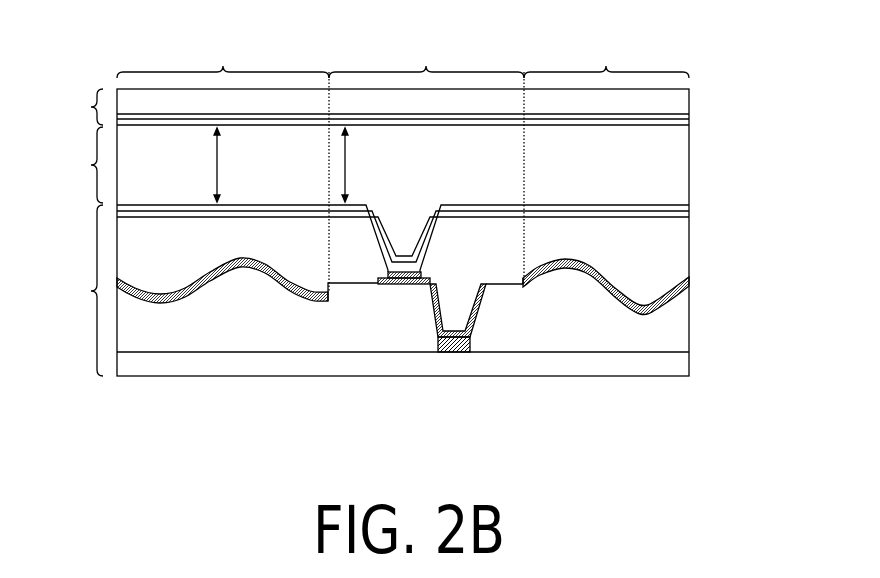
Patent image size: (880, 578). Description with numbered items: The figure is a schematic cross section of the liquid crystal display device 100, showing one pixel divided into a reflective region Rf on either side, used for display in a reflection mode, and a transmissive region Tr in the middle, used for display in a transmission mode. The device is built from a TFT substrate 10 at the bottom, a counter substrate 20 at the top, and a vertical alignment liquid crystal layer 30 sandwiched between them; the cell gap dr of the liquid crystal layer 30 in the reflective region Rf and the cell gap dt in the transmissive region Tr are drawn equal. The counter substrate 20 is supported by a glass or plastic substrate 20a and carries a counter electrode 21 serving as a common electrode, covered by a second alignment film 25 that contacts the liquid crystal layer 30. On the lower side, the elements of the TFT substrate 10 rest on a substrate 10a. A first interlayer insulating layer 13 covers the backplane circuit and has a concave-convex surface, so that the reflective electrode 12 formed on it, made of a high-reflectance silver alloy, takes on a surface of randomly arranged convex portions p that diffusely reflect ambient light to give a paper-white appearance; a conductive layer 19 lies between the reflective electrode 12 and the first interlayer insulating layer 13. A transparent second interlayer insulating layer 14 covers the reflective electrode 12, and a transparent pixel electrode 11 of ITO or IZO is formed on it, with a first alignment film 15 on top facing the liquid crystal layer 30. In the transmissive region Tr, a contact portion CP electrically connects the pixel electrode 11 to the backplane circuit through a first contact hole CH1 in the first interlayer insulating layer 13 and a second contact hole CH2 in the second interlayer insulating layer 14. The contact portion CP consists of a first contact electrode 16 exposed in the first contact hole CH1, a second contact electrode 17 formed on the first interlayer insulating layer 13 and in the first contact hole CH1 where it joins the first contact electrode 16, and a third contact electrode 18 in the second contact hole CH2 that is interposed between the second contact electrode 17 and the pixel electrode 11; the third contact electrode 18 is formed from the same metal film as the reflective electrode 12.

The liquid crystal display device 100 is at (719, 71).
The substrate 20a is at (678, 103).
The counter electrode 21 is at (692, 116).
The second alignment film 25 is at (692, 125).
The counter substrate 20 is at (85, 107).
The liquid crystal layer 30 is at (85, 165).
The TFT substrate 10 is at (85, 290).
The first alignment film 15 is at (690, 206).
The pixel electrode 11 is at (460, 212).
The second contact hole CH2 is at (404, 227).
The second interlayer insulating layer 14 is at (673, 247).
The reflective electrode 12 is at (552, 262).
The convex portion p is at (604, 263).
The conductive layer 19 is at (568, 270).
The first interlayer insulating layer 13 is at (673, 322).
The substrate 10a is at (673, 365).
The third contact electrode 18 is at (394, 284).
The second contact electrode 17 is at (408, 284).
The first contact electrode 16 is at (446, 345).
The first contact hole CH1 is at (453, 311).
The contact portion CP is at (453, 408).
The reflective region Rf is at (403, 165).
The transmissive region Tr is at (426, 58).
The cell gap of the reflective region dr is at (227, 165).
The cell gap of the transmissive region dt is at (355, 165).